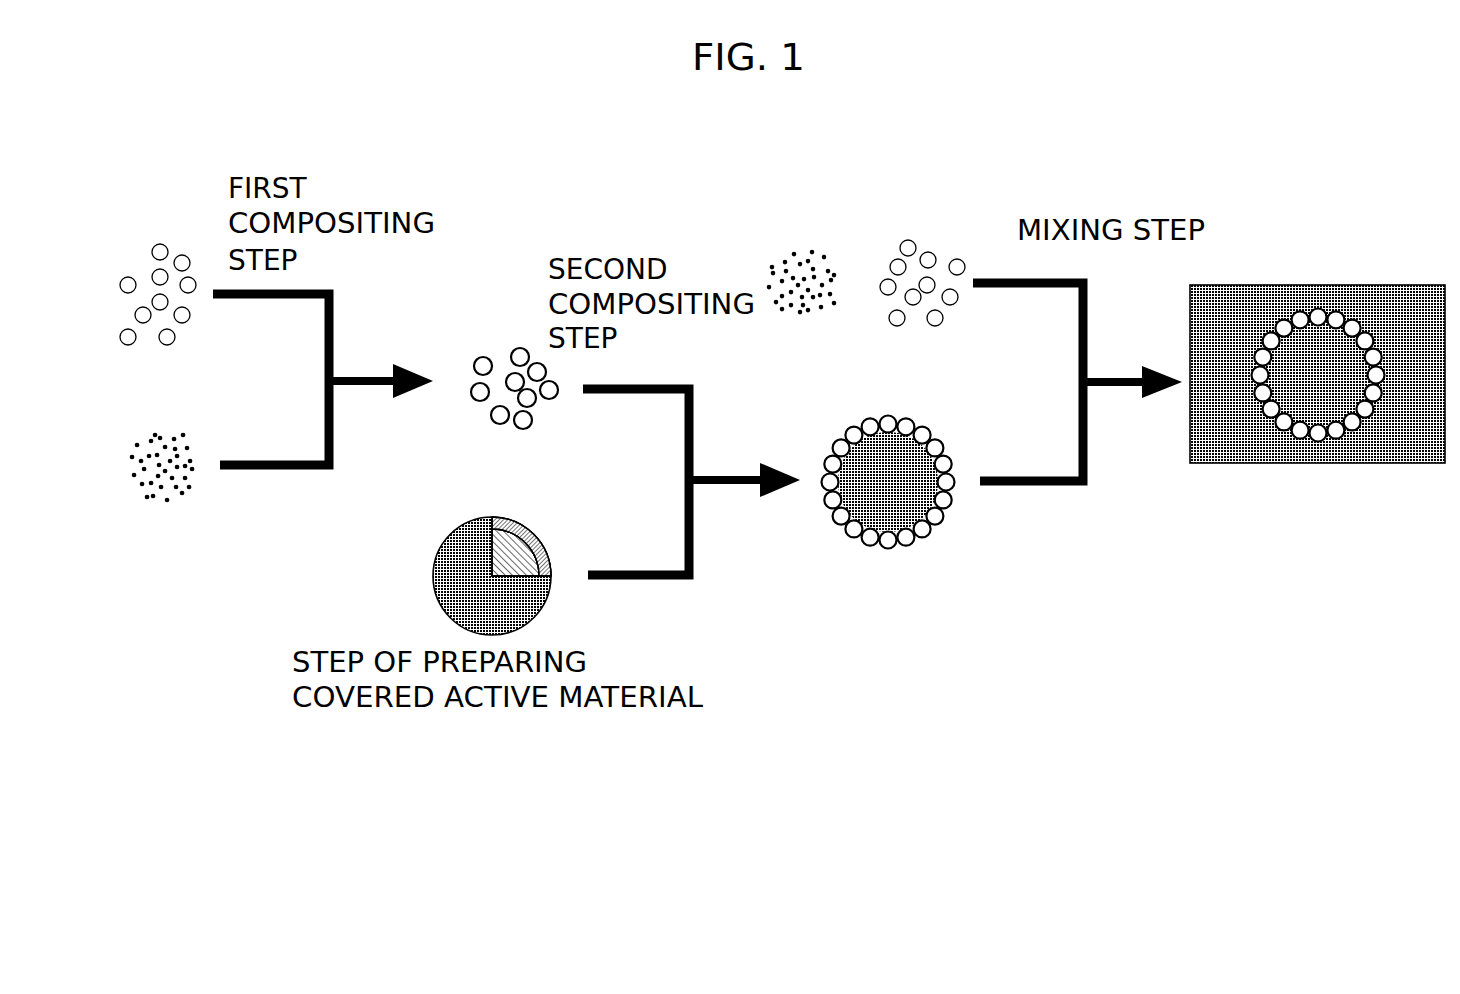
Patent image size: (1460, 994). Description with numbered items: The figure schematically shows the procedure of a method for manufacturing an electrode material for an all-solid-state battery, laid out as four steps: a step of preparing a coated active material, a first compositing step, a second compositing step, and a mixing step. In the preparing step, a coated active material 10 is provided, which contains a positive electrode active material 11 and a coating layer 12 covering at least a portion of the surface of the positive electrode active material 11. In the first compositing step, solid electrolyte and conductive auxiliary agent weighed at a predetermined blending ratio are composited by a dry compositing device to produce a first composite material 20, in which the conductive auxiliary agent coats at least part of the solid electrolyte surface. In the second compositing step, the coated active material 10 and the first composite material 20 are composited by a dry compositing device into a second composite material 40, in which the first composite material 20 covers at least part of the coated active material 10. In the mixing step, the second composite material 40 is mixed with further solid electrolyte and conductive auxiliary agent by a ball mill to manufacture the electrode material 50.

The coated active material 10 is at (443, 505).
The positive electrode active material 11 is at (542, 557).
The coating layer 12 is at (512, 518).
The first composite material 20 is at (497, 320).
The second composite material 40 is at (822, 421).
The electrode material 50 is at (1395, 255).